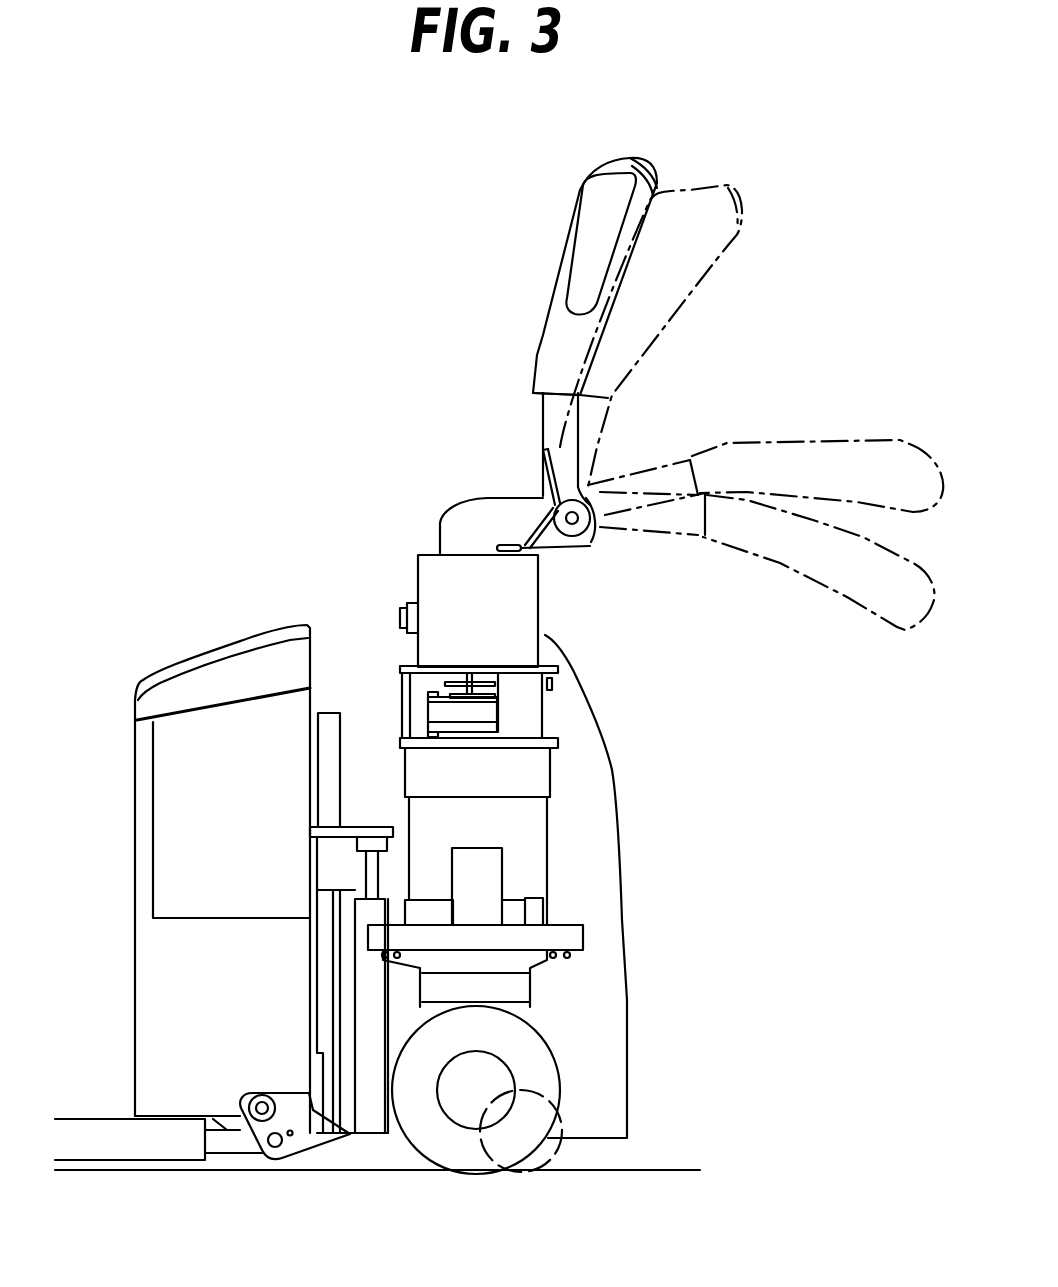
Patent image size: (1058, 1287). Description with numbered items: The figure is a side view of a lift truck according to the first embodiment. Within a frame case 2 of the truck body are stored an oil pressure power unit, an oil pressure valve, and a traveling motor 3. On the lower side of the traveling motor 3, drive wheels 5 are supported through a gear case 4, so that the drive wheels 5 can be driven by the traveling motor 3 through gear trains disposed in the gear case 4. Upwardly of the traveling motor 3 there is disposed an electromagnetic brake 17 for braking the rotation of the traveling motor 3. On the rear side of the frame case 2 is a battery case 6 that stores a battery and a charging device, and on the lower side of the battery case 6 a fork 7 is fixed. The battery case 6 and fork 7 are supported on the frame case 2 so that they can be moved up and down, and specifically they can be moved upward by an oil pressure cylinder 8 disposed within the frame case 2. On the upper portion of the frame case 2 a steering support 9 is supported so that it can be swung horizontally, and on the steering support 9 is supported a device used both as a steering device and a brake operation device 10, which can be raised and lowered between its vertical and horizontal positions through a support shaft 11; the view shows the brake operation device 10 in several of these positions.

The frame case 2 is at (612, 773).
The traveling motor 3 is at (548, 850).
The gear case 4 is at (522, 993).
The drive wheels 5 is at (560, 1083).
The battery case 6 is at (134, 919).
The fork 7 is at (95, 1119).
The oil pressure cylinder 8 is at (370, 1125).
The steering support 9 is at (463, 512).
The brake operation device 10 is at (567, 222).
The support shaft 11 is at (572, 524).
The electromagnetic brake 17 is at (485, 717).